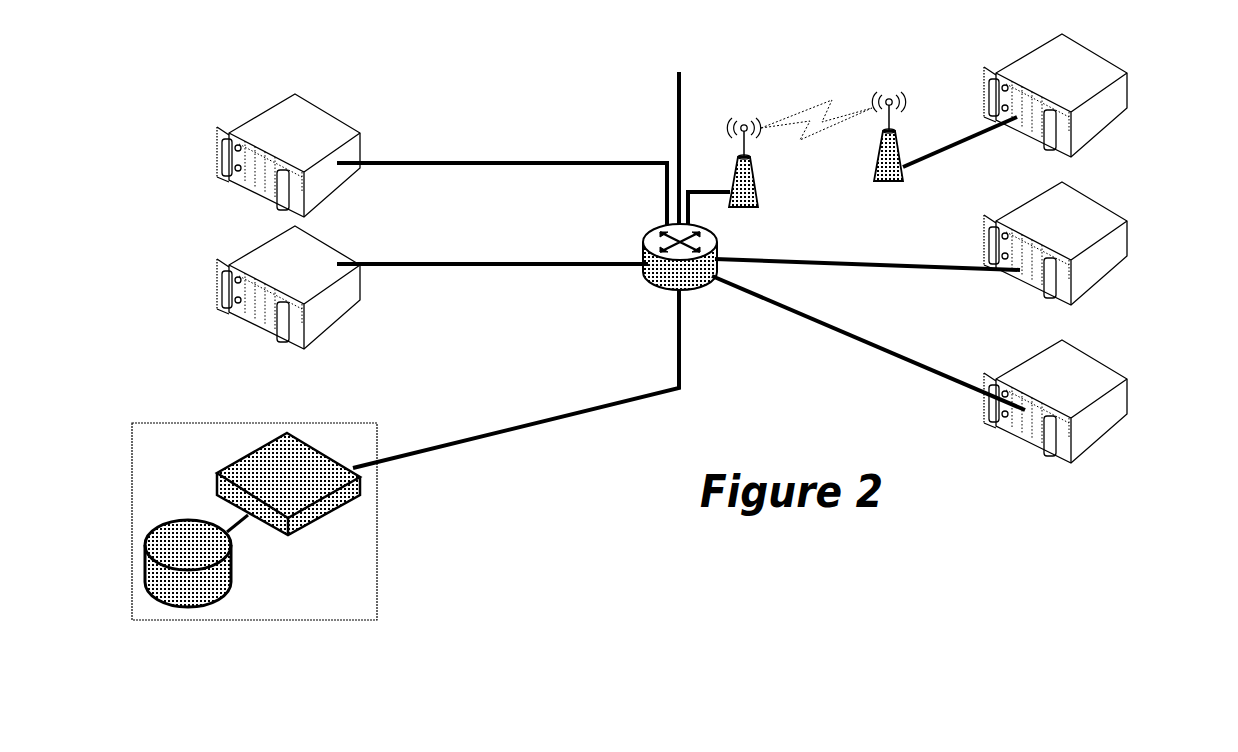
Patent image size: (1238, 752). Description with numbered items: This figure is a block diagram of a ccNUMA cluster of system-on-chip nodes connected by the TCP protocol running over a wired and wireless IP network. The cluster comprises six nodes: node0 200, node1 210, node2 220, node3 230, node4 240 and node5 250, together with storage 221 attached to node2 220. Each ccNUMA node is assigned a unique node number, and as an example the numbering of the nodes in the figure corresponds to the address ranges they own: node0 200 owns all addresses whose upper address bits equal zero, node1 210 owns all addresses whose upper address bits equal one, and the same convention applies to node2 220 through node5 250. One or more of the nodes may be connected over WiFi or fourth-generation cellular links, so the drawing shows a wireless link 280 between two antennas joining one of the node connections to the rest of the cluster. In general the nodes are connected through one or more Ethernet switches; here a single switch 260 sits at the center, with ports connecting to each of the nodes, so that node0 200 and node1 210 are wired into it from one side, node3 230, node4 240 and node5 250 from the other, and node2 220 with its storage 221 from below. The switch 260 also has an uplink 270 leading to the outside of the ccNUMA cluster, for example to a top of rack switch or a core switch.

The node0 200 is at (375, 131).
The node1 210 is at (366, 283).
The node2 220 is at (366, 513).
The storage 221 is at (187, 628).
The node3 230 is at (1060, 100).
The node4 240 is at (970, 243).
The node5 250 is at (966, 369).
The switch 260 is at (648, 237).
The uplink 270 is at (661, 117).
The wireless link 280 is at (797, 119).